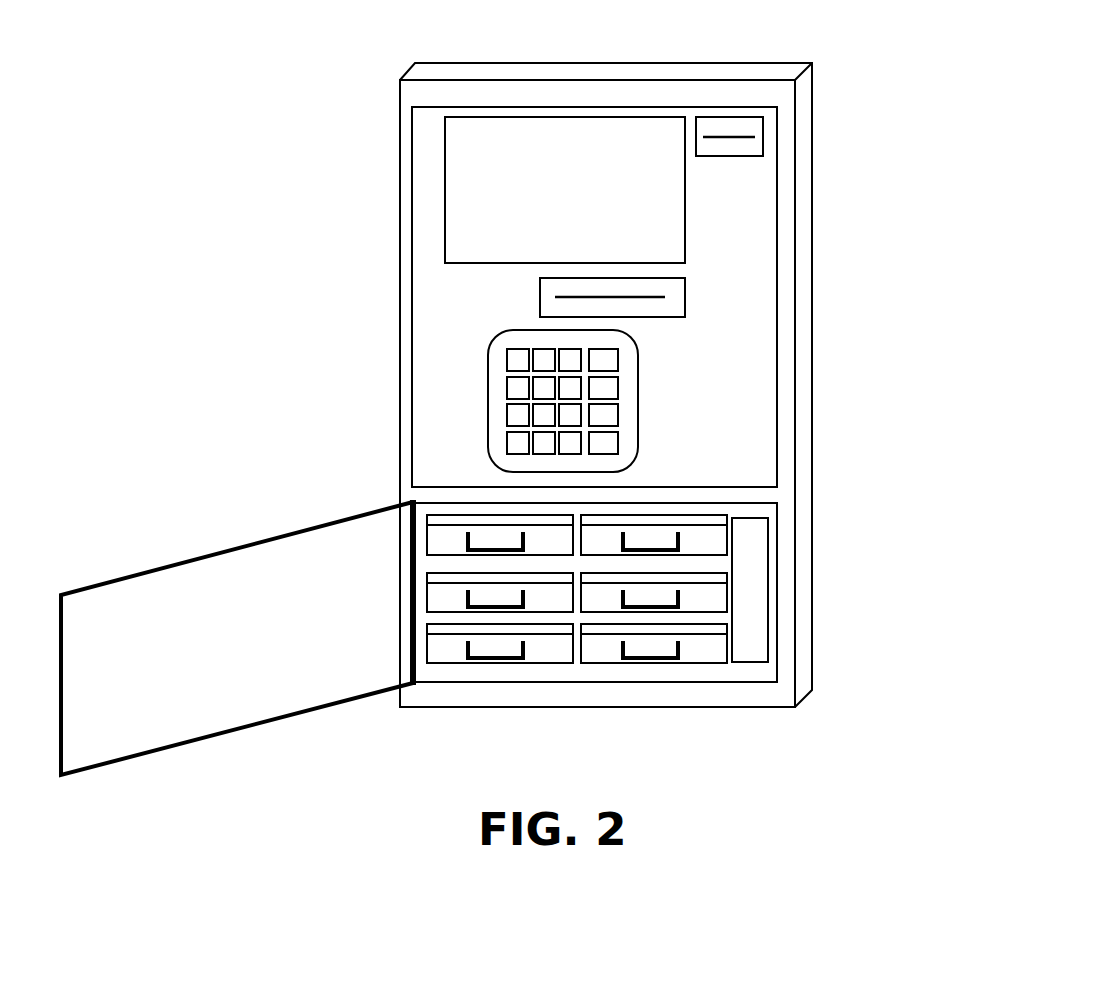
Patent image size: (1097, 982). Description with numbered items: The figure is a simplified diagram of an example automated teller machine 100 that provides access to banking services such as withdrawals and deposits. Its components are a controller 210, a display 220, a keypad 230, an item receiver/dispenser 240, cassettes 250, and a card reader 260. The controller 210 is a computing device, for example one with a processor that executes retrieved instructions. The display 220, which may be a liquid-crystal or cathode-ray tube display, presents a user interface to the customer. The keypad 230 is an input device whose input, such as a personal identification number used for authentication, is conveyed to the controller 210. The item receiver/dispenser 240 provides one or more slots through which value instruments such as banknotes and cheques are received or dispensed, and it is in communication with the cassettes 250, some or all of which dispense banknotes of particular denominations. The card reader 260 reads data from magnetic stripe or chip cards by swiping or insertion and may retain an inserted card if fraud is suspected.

The vending/dispensing apparatus 100 is at (777, 70).
The controller 210 is at (750, 532).
The display 220 is at (666, 246).
The keypad 230 is at (628, 420).
The item receiver/dispenser 240 is at (673, 288).
The cassettes 250 is at (443, 538).
The card reader 260 is at (750, 148).